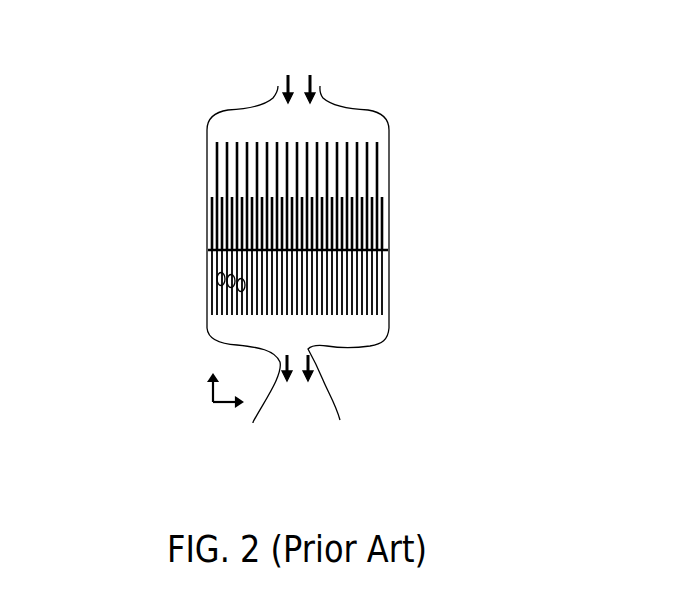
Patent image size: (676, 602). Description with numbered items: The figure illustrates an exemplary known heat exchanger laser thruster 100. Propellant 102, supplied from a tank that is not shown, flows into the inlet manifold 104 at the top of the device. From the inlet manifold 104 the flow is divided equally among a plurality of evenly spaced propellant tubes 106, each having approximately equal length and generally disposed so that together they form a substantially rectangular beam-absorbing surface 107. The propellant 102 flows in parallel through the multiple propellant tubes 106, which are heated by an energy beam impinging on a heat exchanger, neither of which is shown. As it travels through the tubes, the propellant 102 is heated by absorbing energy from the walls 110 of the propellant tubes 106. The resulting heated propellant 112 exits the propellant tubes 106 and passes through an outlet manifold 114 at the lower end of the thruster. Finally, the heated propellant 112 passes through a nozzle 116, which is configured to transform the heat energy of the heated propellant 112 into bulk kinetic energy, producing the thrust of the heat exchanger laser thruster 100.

The heat exchanger laser thruster 100 is at (163, 204).
The propellant 102 is at (318, 79).
The inlet manifold 104 is at (327, 119).
The propellant tubes 106 is at (263, 316).
The beam-absorbing surface 107 is at (245, 128).
The walls 110 is at (237, 288).
The heated propellant 112 is at (317, 348).
The outlet manifold 114 is at (357, 332).
The nozzle 116 is at (277, 417).